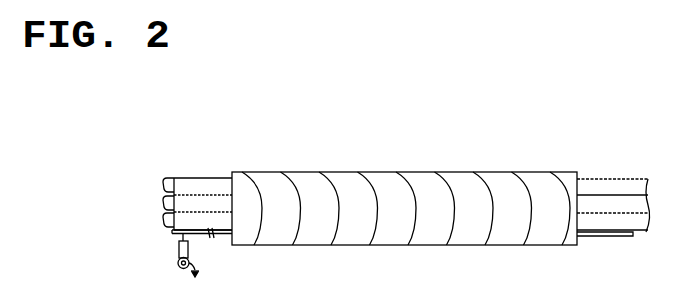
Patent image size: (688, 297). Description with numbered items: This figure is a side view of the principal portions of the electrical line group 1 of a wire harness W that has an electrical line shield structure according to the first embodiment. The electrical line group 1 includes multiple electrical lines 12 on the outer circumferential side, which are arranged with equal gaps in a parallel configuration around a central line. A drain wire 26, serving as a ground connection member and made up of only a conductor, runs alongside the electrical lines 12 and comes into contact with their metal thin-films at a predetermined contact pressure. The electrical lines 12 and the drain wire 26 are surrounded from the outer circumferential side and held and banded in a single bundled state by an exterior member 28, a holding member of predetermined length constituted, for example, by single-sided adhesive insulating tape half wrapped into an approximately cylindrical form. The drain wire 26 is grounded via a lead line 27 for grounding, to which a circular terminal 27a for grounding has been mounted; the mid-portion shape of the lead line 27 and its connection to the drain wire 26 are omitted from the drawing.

The electrical line group 1 is at (609, 178).
The wire harness W is at (516, 139).
The electrical lines 12 is at (201, 182).
The exterior member 28 is at (386, 244).
The drain wire 26 is at (222, 234).
The lead line 27 is at (178, 235).
The circular terminals 27a is at (178, 263).